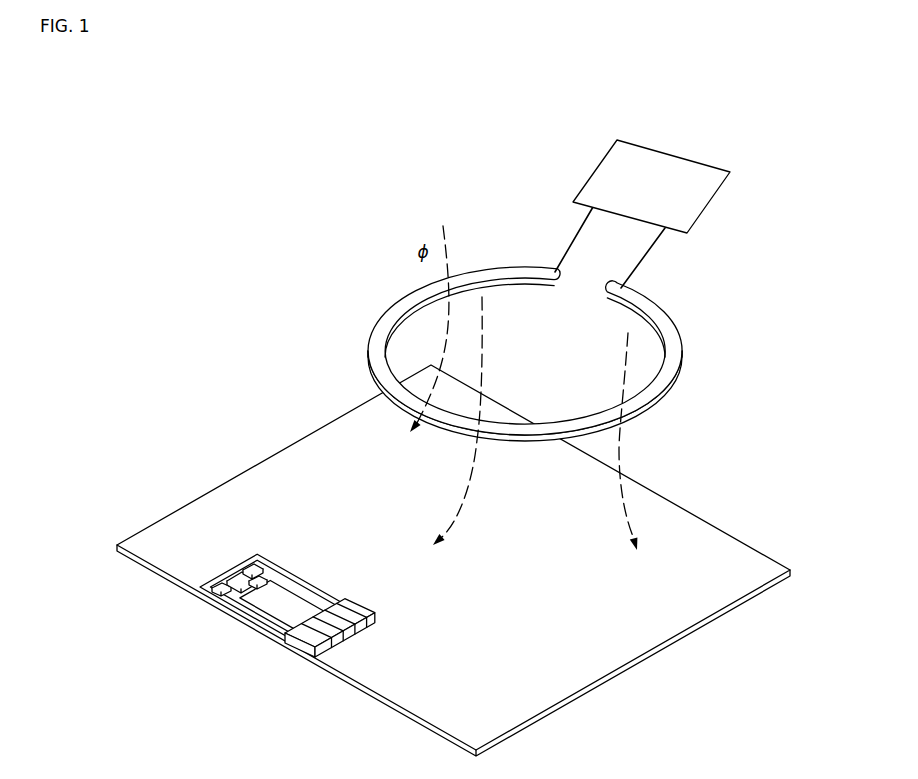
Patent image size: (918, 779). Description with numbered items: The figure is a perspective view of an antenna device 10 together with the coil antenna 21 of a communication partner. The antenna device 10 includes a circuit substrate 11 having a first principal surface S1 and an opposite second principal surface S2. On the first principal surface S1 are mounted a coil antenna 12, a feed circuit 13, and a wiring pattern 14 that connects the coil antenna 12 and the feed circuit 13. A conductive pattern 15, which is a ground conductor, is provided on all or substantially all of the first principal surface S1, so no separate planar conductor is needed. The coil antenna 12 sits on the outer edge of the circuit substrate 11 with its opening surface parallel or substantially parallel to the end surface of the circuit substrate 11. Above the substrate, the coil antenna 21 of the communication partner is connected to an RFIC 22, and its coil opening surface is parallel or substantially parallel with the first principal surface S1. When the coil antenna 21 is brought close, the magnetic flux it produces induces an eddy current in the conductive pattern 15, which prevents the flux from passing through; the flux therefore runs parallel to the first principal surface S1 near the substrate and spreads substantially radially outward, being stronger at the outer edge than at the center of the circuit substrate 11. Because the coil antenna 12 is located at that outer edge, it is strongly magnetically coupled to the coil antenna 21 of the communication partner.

The antenna device 10 is at (456, 561).
The circuit substrate 11 is at (454, 560).
The coil antenna 12 is at (298, 647).
The feed circuit 13 is at (223, 550).
The wiring pattern 14 is at (290, 578).
The conductive pattern 15 is at (298, 457).
The coil antenna of a communication partner 21 is at (679, 351).
The RFIC 22 is at (669, 165).
The first principal surface S1 is at (341, 432).
The second principal surface S2 is at (341, 697).